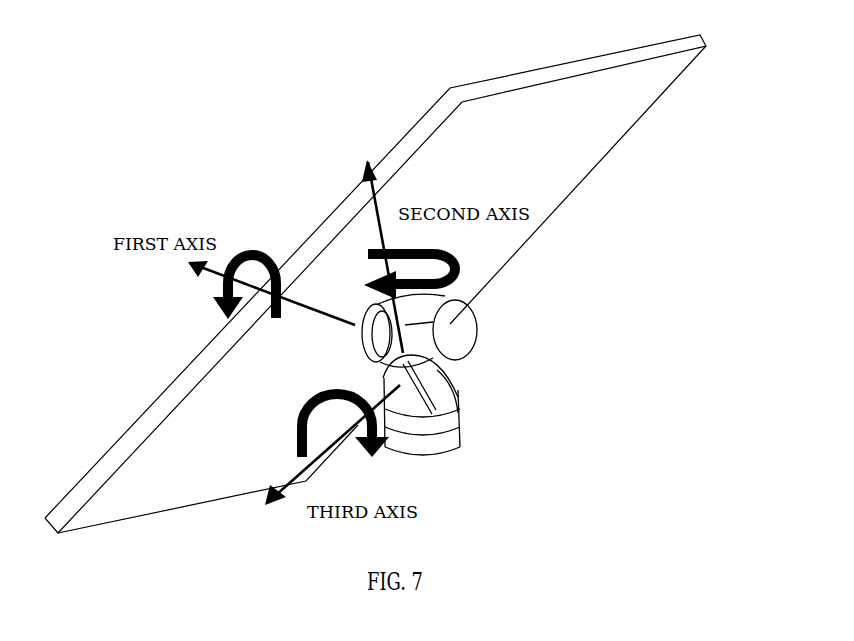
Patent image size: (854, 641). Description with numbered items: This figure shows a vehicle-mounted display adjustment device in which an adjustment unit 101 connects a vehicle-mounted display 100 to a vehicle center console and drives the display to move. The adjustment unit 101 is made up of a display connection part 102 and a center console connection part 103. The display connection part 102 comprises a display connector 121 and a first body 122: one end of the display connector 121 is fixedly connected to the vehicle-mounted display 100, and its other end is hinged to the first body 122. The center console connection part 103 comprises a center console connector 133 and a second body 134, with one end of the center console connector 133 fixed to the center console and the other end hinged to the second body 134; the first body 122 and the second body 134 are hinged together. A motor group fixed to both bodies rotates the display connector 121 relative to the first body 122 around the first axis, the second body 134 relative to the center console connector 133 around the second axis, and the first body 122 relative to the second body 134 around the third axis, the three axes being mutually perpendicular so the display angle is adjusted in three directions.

The vehicle-mounted display 100 is at (670, 66).
The adjustment unit 101 is at (575, 344).
The display connection part 102 is at (534, 297).
The center console connection part 103 is at (545, 394).
The display connector 121 is at (443, 300).
The first body 122 is at (443, 327).
The center console connector 133 is at (440, 460).
The second body 134 is at (445, 385).